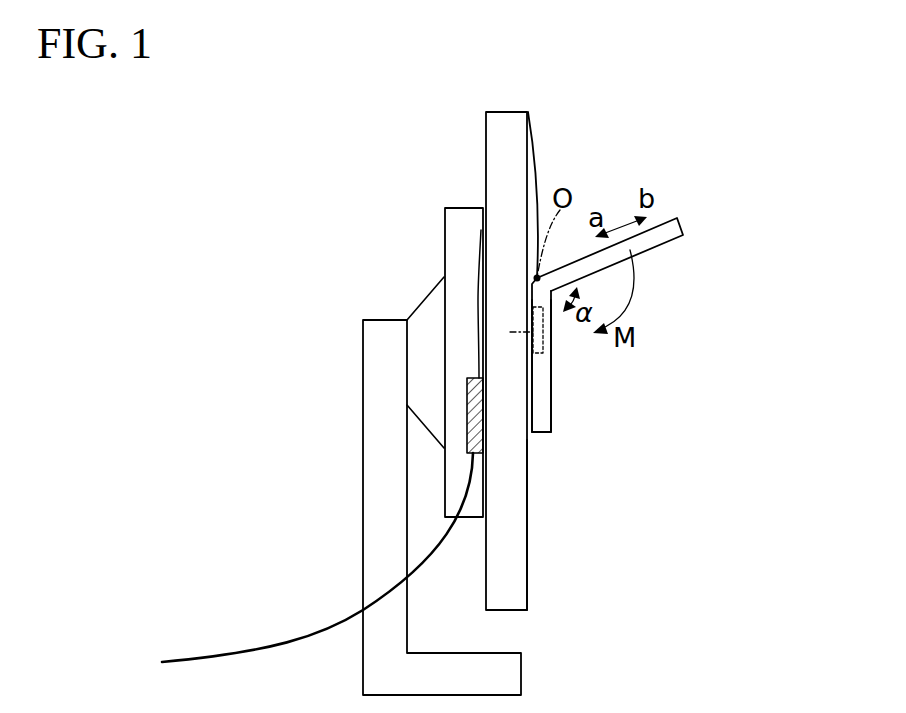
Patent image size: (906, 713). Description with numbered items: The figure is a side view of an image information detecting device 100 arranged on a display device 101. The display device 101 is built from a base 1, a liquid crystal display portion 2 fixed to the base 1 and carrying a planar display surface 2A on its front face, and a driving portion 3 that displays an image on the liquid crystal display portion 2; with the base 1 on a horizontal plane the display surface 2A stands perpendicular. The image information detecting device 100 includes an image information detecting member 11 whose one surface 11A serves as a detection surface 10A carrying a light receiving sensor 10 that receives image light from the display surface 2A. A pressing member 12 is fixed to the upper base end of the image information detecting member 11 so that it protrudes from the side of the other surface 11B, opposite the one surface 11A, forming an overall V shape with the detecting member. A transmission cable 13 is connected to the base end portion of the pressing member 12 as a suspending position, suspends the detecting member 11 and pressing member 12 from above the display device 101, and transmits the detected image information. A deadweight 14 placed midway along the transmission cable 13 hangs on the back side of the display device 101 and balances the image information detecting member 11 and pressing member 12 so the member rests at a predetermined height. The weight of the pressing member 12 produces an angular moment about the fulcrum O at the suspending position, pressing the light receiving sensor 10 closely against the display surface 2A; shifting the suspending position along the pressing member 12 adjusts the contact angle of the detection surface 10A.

The base 1 is at (521, 672).
The liquid crystal display portion 2 is at (518, 583).
The display surface 2A is at (528, 557).
The driving portion 3 is at (443, 220).
The light receiving sensor 10 is at (543, 343).
The detection surface 10A is at (533, 330).
The image information detecting member 11 is at (551, 412).
The one surface 11A is at (532, 402).
The other surface 11B is at (551, 382).
The pressing member 12 is at (680, 223).
The transmission cable 13 is at (535, 158).
The deadweight 14 is at (467, 430).
The image information detecting device 100 is at (680, 197).
The display device 101 is at (340, 372).